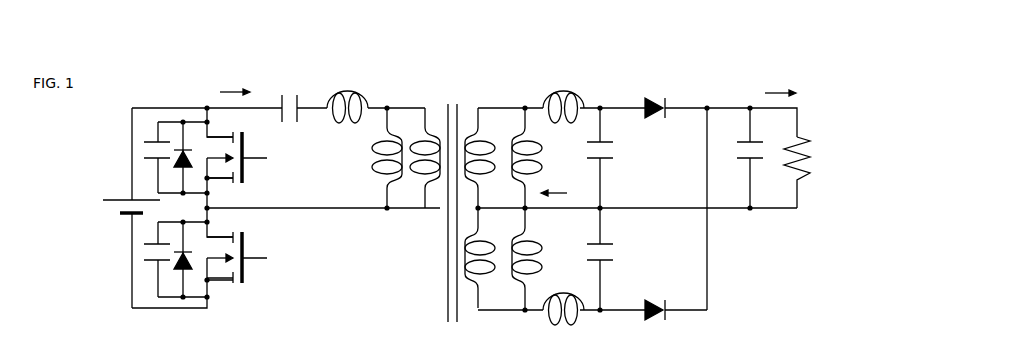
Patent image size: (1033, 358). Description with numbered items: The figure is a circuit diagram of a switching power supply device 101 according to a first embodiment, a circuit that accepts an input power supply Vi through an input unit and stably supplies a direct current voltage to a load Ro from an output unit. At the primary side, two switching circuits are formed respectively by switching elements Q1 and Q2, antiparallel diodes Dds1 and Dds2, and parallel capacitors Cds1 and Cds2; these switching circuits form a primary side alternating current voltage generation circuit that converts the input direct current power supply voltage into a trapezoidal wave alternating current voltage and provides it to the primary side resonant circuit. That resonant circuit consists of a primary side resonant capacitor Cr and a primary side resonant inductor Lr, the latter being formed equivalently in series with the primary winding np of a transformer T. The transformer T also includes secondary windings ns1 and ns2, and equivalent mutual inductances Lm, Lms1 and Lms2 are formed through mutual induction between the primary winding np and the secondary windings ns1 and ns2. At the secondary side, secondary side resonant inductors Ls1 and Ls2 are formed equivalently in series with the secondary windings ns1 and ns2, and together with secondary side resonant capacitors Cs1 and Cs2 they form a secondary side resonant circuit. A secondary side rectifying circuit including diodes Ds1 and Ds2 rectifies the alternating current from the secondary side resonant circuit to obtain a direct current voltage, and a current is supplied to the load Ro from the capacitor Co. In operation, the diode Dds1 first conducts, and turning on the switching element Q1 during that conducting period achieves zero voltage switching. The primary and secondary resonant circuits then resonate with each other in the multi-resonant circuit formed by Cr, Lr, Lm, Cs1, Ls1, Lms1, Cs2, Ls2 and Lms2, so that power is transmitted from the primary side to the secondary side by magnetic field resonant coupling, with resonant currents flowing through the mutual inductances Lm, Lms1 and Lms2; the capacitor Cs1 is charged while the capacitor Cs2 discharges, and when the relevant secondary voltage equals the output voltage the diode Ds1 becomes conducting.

The switching power supply device 101 is at (796, 26).
The input power supply Vi is at (152, 208).
The parallel capacitor Cds2 is at (146, 146).
The antiparallel diode Dds2 is at (175, 142).
The switching element Q2 is at (246, 157).
The parallel capacitor Cds1 is at (144, 268).
The antiparallel diode Dds1 is at (177, 270).
The switching element Q1 is at (246, 257).
The primary side resonant capacitor Cr is at (288, 95).
The primary side resonant inductor Lr is at (347, 94).
The equivalent mutual inductance Lm is at (371, 158).
The primary winding np is at (421, 144).
The transformer T is at (451, 200).
The secondary winding ns1 is at (483, 144).
The secondary winding ns2 is at (484, 276).
The equivalent mutual inductance Lms1 is at (542, 158).
The equivalent mutual inductance Lms2 is at (543, 258).
The secondary side resonant inductor Ls1 is at (563, 95).
The secondary side resonant inductor Ls2 is at (563, 323).
The secondary side resonant capacitor Cs1 is at (609, 158).
The secondary side resonant capacitor Cs2 is at (609, 259).
The diode Ds1 is at (657, 97).
The diode Ds2 is at (656, 326).
The capacitor Co is at (741, 158).
The load Ro is at (787, 167).